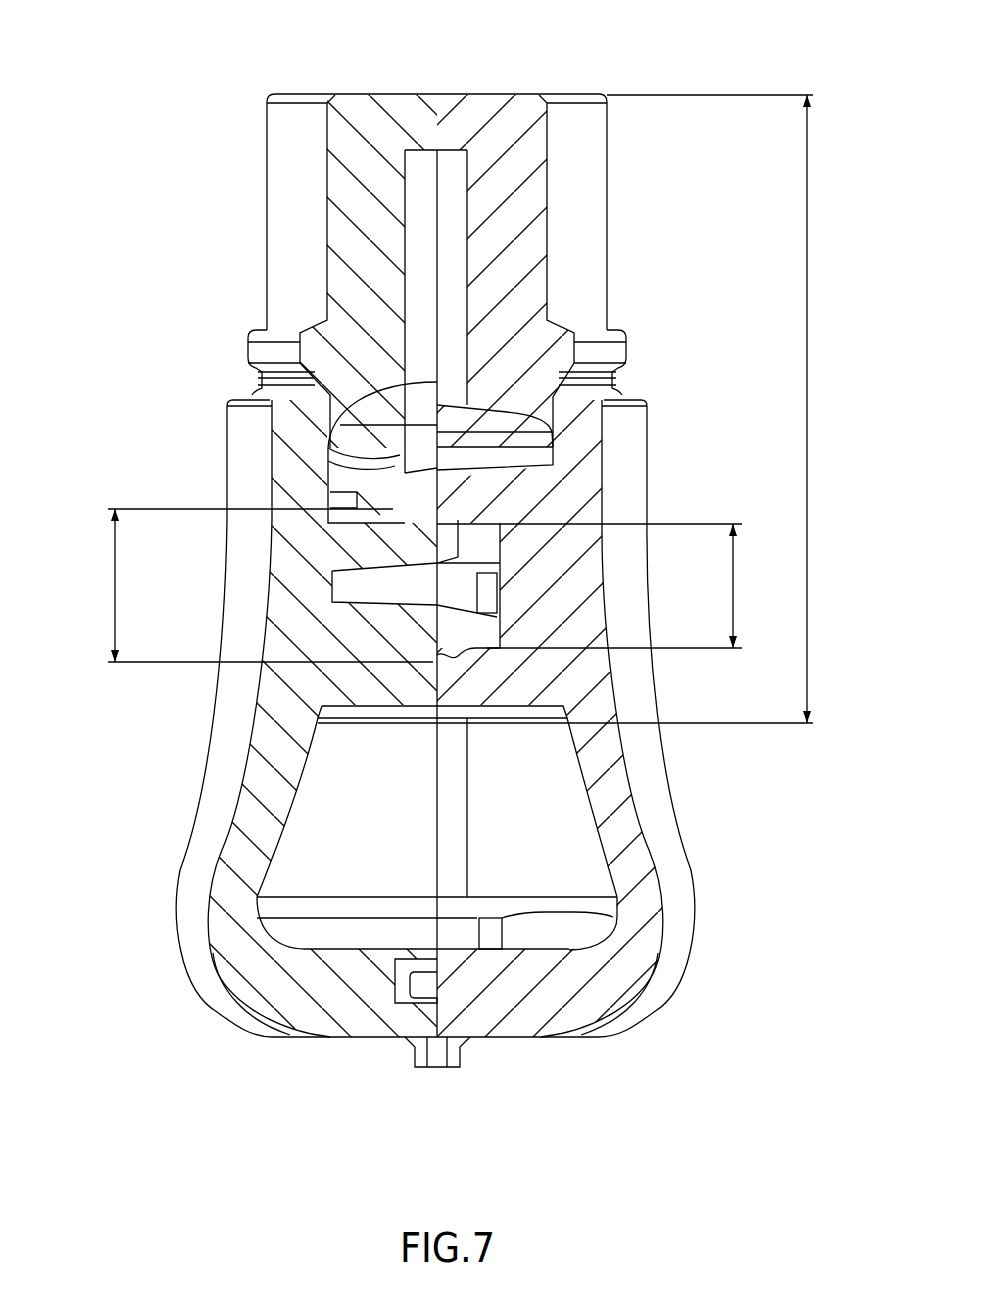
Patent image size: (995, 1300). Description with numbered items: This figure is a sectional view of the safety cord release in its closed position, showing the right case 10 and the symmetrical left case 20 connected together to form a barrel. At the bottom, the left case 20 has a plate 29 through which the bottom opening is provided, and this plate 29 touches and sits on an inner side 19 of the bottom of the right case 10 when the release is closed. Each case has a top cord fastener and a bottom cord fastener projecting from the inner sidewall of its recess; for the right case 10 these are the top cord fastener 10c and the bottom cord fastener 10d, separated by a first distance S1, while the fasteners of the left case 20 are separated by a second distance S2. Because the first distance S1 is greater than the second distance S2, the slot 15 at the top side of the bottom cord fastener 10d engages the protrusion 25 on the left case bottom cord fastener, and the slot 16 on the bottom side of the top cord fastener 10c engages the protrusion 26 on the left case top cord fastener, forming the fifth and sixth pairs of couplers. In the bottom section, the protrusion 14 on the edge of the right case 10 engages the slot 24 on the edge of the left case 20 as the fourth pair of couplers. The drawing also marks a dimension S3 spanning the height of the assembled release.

The right case 10 is at (479, 756).
The top cord fastener 10c is at (423, 480).
The bottom cord fastener 10d is at (453, 677).
The protrusion 14 is at (420, 985).
The slot 15 is at (280, 515).
The protrusion 25 is at (410, 480).
The slot 16 is at (272, 715).
The protrusion 26 is at (463, 657).
The inner side 19 is at (440, 947).
The left case 20 is at (258, 223).
The slot 24 is at (405, 980).
The plate 29 is at (453, 937).
The first distance S1 is at (255, 585).
The second distance S2 is at (589, 586).
The third spacing S3 is at (565, 409).